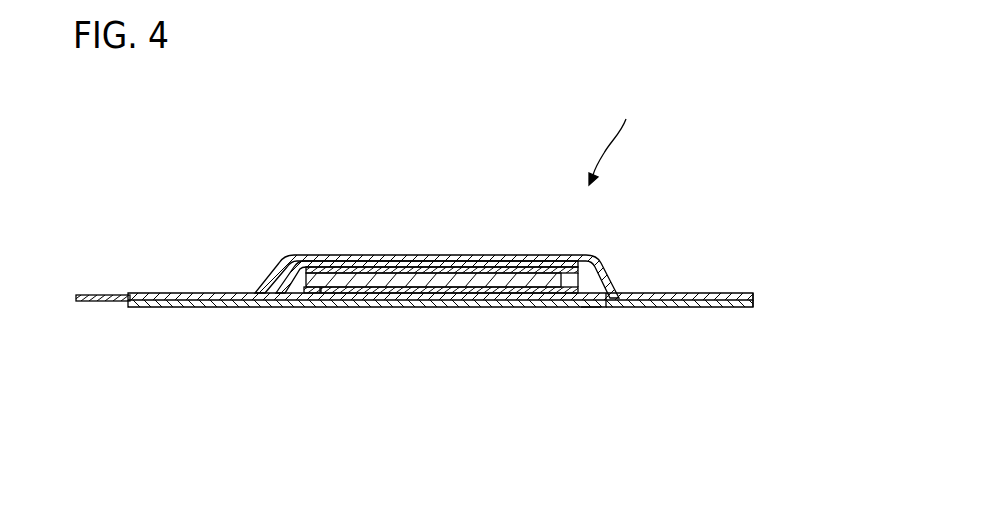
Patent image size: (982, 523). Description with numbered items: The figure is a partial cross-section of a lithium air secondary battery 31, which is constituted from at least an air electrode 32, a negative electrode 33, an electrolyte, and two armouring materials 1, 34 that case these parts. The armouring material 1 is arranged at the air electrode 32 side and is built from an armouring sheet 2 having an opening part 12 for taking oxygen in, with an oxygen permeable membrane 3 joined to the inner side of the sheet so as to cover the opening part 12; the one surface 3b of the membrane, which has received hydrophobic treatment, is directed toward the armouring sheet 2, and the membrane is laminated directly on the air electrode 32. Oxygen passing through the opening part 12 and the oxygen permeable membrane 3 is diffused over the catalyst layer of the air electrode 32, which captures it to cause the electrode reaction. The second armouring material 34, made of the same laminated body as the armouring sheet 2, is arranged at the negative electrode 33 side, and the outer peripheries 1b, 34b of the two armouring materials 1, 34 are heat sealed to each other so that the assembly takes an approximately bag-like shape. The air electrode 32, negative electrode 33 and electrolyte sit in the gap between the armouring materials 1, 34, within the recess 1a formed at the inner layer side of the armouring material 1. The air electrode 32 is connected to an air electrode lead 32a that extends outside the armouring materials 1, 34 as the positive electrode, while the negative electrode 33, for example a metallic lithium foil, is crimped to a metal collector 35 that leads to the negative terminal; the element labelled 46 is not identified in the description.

The lithium air secondary battery 31 is at (641, 115).
The armouring material 1 is at (593, 306).
The recess 1a is at (588, 307).
The outer periphery of the armouring material 1b is at (182, 295).
The armouring sheet 2 is at (751, 292).
The oxygen permeable membrane 3 is at (457, 278).
The one surface of the oxygen permeable membrane 3b is at (502, 287).
The opening part 12 is at (549, 256).
The air electrode 32 is at (402, 256).
The air electrode lead 32a is at (282, 257).
The negative electrode 33 is at (338, 262).
The armouring material 34 is at (453, 307).
The outer periphery of the armouring material 34b is at (180, 307).
The collector 35 is at (314, 293).
The terminal lead 46 is at (104, 301).